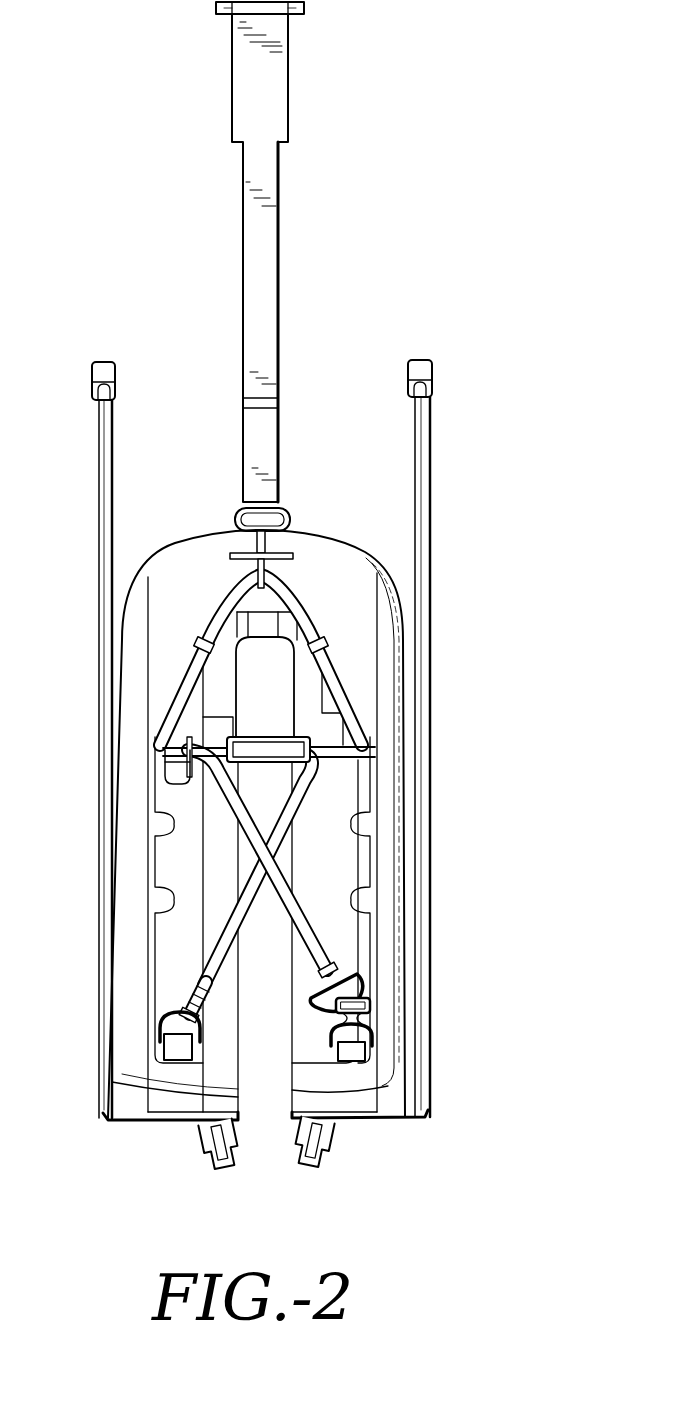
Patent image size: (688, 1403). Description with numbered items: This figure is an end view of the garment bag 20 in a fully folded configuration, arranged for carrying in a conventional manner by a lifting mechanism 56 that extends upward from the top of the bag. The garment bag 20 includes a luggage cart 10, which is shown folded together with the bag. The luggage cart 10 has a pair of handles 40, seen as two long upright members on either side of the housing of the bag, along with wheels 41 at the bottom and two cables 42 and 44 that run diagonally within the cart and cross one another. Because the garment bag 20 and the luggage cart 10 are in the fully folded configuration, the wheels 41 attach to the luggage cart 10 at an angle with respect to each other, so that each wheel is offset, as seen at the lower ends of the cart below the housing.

The luggage cart 10 is at (283, 966).
The garment bag 20 is at (357, 604).
The handles 40 is at (93, 378).
The wheels 41 is at (202, 1138).
The cable 42 is at (293, 904).
The cable 44 is at (224, 918).
The lifting mechanism 56 is at (279, 277).